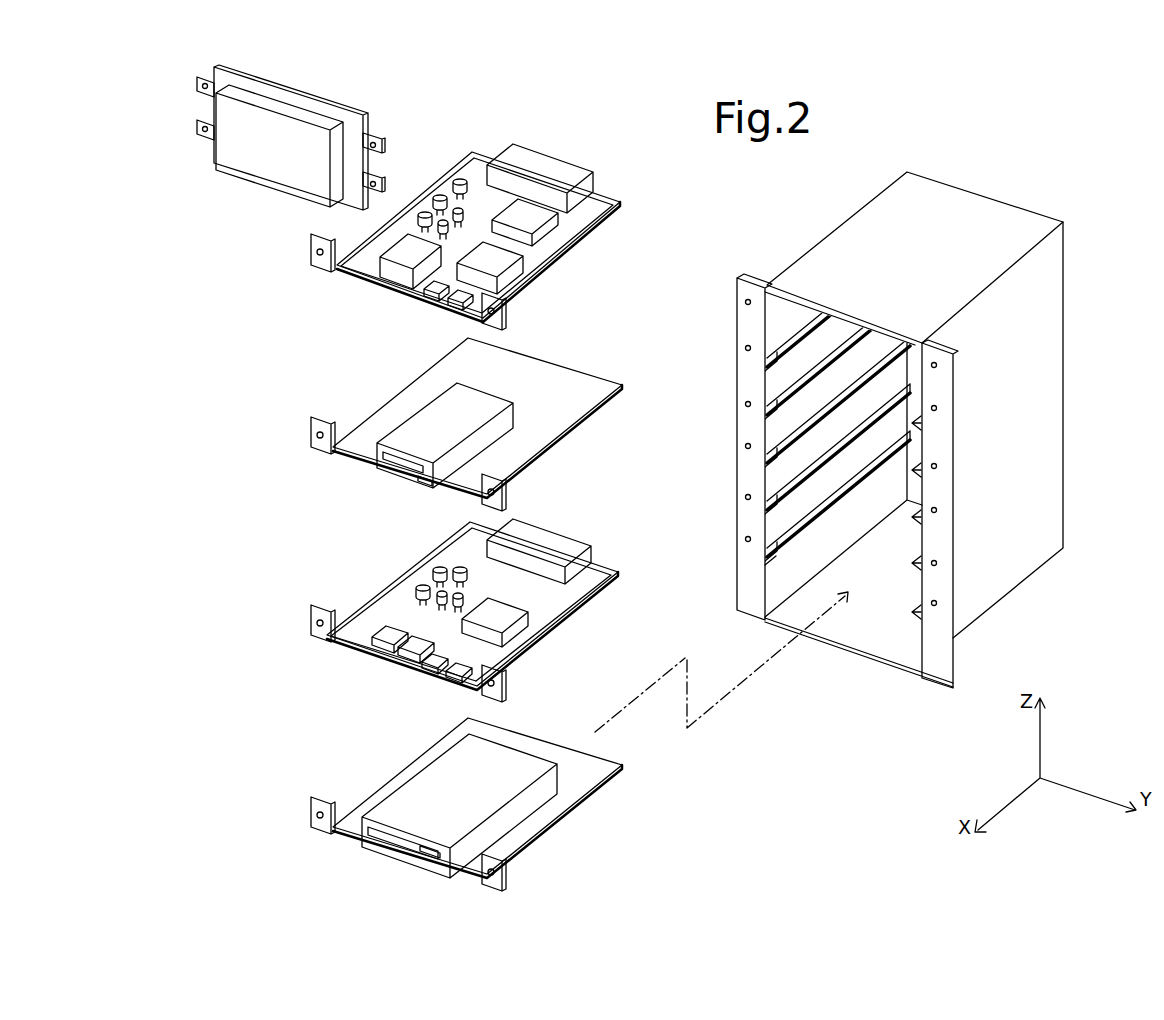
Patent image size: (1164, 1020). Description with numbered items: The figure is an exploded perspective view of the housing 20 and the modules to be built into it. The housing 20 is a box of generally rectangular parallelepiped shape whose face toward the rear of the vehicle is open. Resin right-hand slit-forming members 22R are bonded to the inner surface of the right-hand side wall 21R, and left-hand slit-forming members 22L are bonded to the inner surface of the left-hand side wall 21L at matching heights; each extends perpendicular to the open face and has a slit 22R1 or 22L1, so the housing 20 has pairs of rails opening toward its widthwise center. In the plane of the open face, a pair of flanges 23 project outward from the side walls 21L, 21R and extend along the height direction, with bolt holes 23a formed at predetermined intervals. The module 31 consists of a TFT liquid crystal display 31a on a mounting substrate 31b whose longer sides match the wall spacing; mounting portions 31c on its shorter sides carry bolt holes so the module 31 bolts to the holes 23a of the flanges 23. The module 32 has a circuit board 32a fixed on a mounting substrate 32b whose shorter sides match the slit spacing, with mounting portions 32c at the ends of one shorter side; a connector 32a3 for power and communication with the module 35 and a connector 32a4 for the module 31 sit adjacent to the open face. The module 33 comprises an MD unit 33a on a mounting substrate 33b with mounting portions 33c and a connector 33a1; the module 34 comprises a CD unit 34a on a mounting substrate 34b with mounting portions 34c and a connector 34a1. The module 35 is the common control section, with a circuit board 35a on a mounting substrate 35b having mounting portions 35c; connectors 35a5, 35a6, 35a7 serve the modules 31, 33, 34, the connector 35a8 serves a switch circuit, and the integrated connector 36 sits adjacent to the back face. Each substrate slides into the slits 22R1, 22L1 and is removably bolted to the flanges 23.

The housing 20 is at (969, 164).
The left-hand side wall 21L is at (779, 316).
The right-hand side wall 21R is at (1053, 420).
The left-hand slit-forming members 22L is at (775, 541).
The slit 22L1 is at (770, 565).
The right-hand slit-forming members 22R is at (918, 604).
The slit 22R1 is at (913, 610).
The flanges 23 is at (735, 378).
The bolt holes 23a is at (748, 302).
The module 31 is at (329, 78).
The liquid crystal display 31a is at (258, 168).
The mounting substrate 31b is at (254, 82).
The mounting portions 31c is at (197, 86).
The module 32 is at (484, 126).
The circuit board 32a is at (588, 224).
The connector 32a3 is at (426, 292).
The connector 32a4 is at (452, 303).
The mounting substrate 32b is at (562, 252).
The mounting portions 32c is at (311, 252).
The module 33 is at (398, 378).
The MD unit 33a is at (404, 416).
The connector 33a1 is at (422, 478).
The mounting substrate 33b is at (563, 436).
The mounting portions 33c is at (311, 437).
The module 34 is at (398, 762).
The CD unit 34a is at (386, 798).
The connector 34a1 is at (418, 841).
The mounting substrate 34b is at (565, 814).
The mounting portions 34c is at (311, 814).
The module 35 is at (398, 560).
The circuit board 35a is at (573, 608).
The connector 35a5 is at (363, 641).
The connector 35a6 is at (400, 658).
The connector 35a7 is at (435, 673).
The connector 35a8 is at (453, 681).
The mounting substrate 35b is at (547, 643).
The mounting portions 35c is at (311, 626).
The integrated connector 36 is at (553, 538).